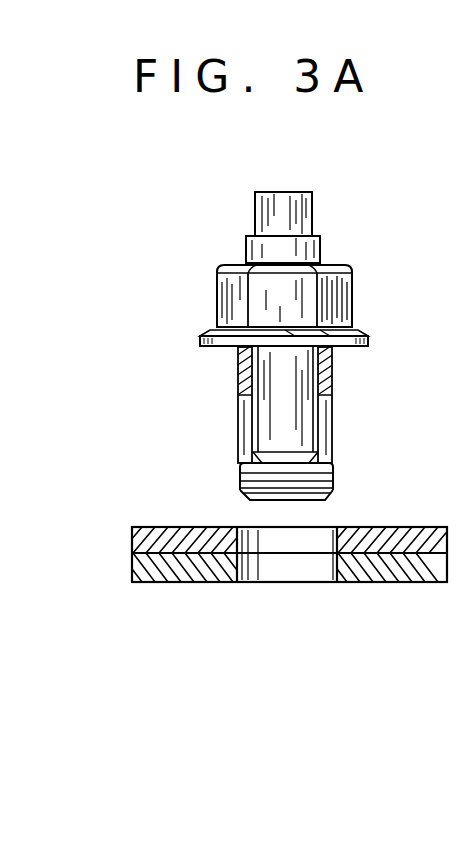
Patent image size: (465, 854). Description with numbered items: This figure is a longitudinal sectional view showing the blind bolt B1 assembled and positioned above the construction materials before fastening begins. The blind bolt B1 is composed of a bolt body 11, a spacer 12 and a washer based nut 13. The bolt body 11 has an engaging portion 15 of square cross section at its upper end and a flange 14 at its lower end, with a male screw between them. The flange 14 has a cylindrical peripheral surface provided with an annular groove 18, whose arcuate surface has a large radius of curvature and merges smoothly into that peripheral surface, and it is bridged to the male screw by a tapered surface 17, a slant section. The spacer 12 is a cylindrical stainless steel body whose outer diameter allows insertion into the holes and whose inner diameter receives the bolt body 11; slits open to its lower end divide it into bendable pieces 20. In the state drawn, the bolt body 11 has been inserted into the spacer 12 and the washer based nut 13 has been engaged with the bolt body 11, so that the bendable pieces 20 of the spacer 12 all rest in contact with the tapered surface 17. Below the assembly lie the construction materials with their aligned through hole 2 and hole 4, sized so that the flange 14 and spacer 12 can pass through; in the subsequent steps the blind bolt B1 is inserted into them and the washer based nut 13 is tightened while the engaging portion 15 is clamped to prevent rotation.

The blind bolt B1 is at (210, 222).
The engaging portion 15 is at (312, 208).
The bolt body 11 is at (320, 249).
The washer based nut 13 is at (353, 298).
The spacer 12 is at (337, 363).
The bendable pieces 20 is at (333, 410).
The tapered surface 17 is at (337, 453).
The flange 14 is at (238, 473).
The annular groove 18 is at (333, 480).
The through hole 2 is at (253, 581).
The hole 4 is at (242, 533).